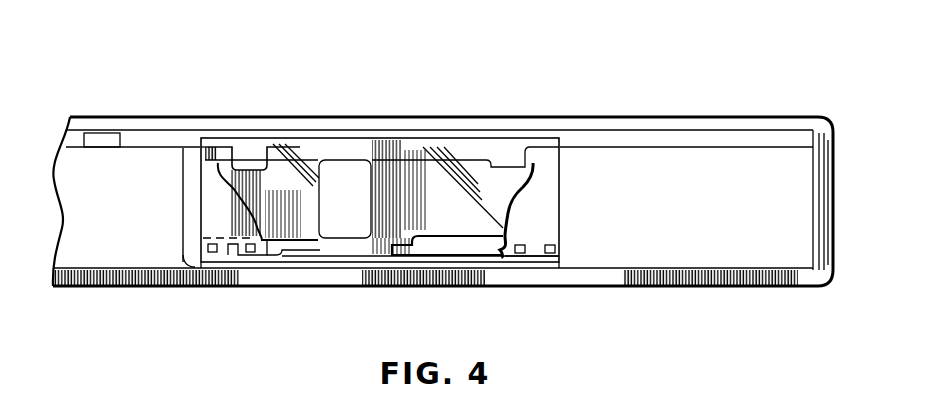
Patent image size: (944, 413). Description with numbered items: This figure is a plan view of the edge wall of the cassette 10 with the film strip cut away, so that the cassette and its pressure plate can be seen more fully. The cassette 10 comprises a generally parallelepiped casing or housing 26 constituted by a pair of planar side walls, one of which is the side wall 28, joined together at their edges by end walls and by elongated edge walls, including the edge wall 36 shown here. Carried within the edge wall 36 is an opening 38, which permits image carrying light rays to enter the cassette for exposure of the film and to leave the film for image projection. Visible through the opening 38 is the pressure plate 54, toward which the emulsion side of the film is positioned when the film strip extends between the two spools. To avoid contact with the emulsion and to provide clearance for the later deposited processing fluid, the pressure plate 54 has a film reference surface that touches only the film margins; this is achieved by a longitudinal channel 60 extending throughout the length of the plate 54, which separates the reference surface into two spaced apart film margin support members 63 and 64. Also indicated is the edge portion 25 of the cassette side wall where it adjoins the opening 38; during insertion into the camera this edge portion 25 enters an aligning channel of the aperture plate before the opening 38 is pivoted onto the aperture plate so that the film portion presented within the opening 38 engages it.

The cassette 10 is at (590, 102).
The edge portion 25 is at (325, 129).
The casing or housing 26 is at (518, 118).
The planar side wall 28 is at (607, 118).
The elongated edge wall 36 is at (707, 240).
The opening 38 is at (558, 207).
The pressure plate 54 is at (365, 248).
The longitudinal channel 60 is at (422, 175).
The film margin support member 63 is at (222, 150).
The film margin support member 64 is at (288, 250).